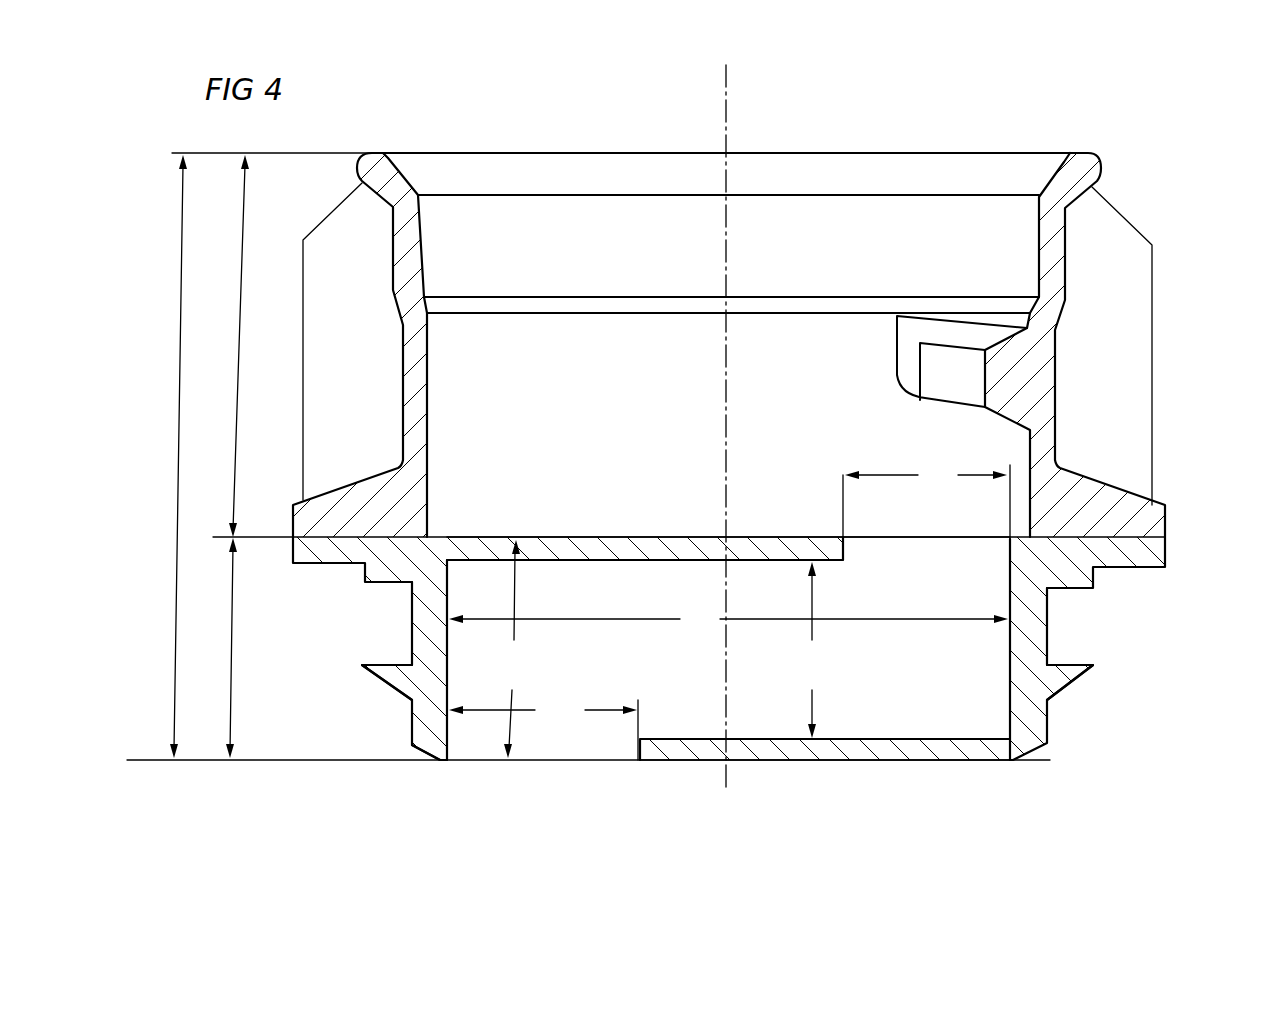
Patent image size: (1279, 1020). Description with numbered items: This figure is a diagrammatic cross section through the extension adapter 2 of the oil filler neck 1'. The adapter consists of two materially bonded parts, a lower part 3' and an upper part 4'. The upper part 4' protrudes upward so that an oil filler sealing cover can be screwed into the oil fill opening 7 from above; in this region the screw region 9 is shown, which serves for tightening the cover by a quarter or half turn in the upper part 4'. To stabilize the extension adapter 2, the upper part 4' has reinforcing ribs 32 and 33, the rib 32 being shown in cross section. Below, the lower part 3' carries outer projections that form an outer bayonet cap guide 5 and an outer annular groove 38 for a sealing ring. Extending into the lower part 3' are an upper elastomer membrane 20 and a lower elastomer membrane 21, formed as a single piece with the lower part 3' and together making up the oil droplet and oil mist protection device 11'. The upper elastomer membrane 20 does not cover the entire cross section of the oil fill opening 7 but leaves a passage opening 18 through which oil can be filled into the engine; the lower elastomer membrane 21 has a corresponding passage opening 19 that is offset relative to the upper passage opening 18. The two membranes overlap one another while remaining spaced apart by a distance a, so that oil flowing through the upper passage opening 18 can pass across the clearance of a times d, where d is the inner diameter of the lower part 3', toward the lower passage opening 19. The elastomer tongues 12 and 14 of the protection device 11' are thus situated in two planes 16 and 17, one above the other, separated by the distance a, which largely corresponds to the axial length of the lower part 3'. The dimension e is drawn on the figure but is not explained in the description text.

The oil filler neck 1' is at (825, 142).
The extension adapter 2 is at (176, 456).
The lower part 3' is at (233, 648).
The upper part 4' is at (675, 346).
The outer bayonet cap guide 5 is at (380, 684).
The oil fill opening 7 is at (877, 214).
The outer screw region 9 is at (928, 378).
The oil droplet and oil mist protection device 11' is at (362, 660).
The elastomer tongue 12 is at (585, 548).
The elastomer tongue 14 is at (851, 757).
The plane 16 is at (905, 532).
The plane 17 is at (540, 752).
The passage opening 18 is at (926, 510).
The passage opening 19 is at (543, 727).
The upper elastomer membrane 20 is at (761, 524).
The lower elastomer membrane 21 is at (745, 772).
The reinforcing rib 32 is at (303, 366).
The reinforcing rib 33 is at (1152, 380).
The outer annular groove 38 is at (1050, 616).
The distance a is at (809, 650).
The inner diameter d is at (728, 621).
The distance e is at (510, 649).